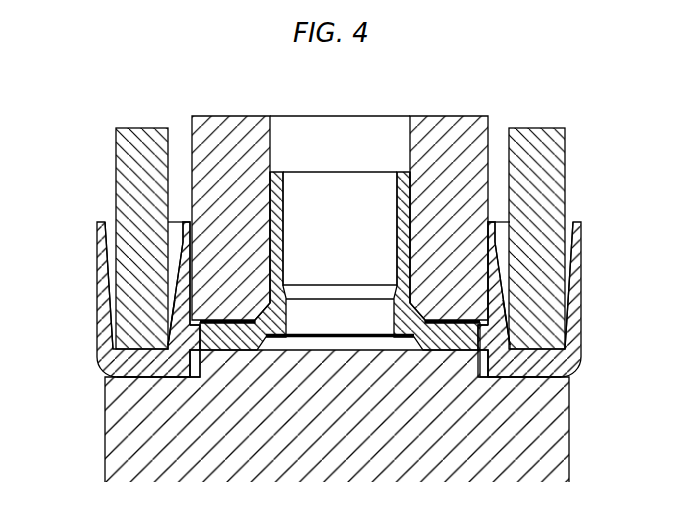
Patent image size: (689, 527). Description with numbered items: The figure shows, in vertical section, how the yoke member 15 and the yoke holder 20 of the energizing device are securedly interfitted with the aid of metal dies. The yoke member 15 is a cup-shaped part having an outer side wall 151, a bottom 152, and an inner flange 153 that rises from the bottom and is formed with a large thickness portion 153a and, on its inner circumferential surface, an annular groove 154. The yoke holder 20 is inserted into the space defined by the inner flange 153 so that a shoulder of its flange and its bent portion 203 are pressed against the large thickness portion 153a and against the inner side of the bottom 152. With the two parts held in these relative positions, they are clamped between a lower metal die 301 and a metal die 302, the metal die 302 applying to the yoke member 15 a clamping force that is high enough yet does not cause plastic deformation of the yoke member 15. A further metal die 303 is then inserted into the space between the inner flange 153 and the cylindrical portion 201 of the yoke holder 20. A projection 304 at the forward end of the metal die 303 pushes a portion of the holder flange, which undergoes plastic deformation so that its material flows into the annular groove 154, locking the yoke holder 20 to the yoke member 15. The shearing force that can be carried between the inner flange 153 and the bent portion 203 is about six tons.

The yoke member 15 is at (92, 259).
The outer side wall of yoke member 151 is at (100, 297).
The bottom 152 is at (130, 377).
The inner flange 153 is at (185, 262).
The large thickness portion 153a is at (180, 297).
The annular groove 154 is at (190, 358).
The yoke holder 20 is at (251, 356).
The cylindrical portion 201 is at (275, 193).
The bent portion 203 is at (200, 362).
The metal die 301 is at (112, 437).
The metal die 302 is at (122, 142).
The metal die 303 is at (237, 115).
The projection 304 is at (196, 325).